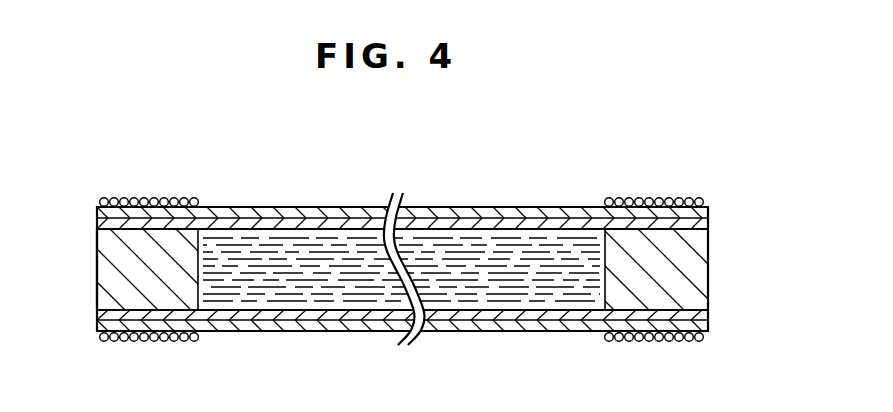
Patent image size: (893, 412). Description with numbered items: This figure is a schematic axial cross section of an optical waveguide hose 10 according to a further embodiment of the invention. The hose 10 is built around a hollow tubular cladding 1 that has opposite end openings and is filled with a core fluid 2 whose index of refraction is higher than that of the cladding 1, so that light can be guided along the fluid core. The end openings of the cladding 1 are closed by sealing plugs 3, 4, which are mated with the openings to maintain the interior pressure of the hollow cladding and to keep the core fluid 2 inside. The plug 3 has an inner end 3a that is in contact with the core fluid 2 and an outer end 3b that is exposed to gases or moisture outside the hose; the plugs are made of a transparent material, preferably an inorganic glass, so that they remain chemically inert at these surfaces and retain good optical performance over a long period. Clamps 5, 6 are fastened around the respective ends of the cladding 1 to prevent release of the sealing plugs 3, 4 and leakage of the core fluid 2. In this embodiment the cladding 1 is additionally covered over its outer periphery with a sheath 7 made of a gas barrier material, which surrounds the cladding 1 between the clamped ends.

The hollow tubular cladding 1 is at (295, 222).
The core fluid 2 is at (310, 300).
The sealing plug 3 is at (112, 292).
The inner end of the plug 3a is at (213, 238).
The outer end of the plug 3b is at (97, 237).
The sealing plug 4 is at (696, 267).
The clamp 5 is at (100, 206).
The clamp 6 is at (660, 198).
The sheath 7 is at (148, 212).
The optical waveguide hose 10 is at (504, 154).